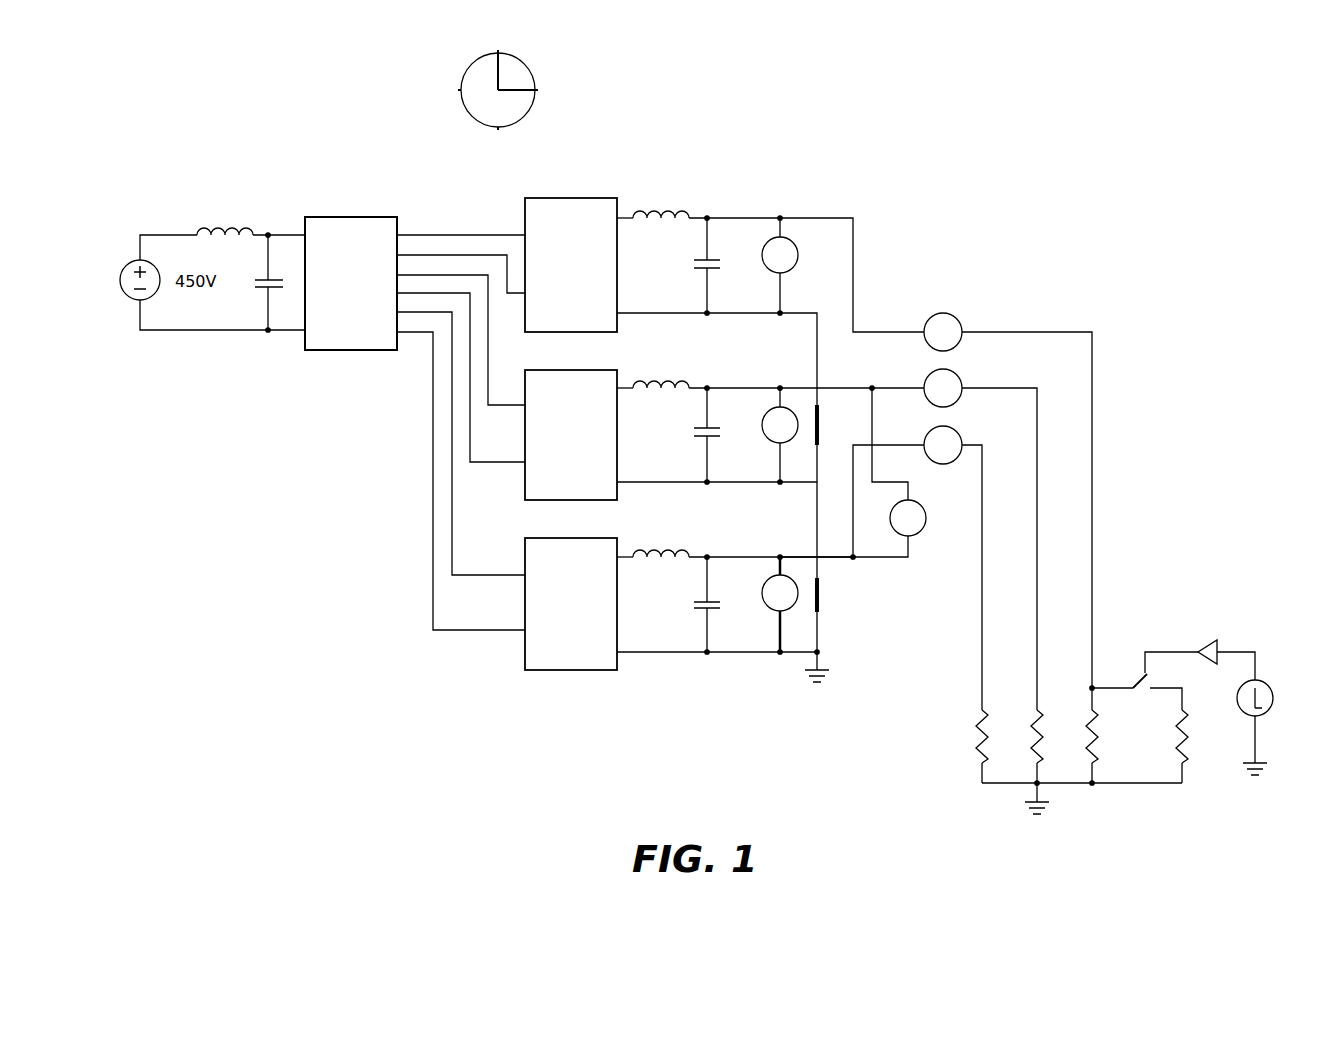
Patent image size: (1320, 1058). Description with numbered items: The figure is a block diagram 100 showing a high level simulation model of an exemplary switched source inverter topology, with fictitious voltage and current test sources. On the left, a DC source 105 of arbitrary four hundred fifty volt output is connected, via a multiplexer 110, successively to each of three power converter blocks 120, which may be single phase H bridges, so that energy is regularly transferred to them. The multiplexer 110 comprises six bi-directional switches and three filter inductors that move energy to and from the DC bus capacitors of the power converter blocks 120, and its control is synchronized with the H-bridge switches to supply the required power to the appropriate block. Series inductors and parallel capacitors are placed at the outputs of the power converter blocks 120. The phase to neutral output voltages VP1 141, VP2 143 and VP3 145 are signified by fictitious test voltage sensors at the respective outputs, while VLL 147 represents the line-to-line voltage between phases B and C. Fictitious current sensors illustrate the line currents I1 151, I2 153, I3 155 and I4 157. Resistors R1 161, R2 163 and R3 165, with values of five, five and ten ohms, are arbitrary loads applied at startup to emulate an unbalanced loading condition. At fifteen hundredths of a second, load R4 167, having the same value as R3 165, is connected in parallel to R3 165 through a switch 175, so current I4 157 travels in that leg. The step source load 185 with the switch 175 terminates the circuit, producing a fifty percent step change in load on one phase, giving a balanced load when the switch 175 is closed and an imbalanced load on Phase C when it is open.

The block diagram 100 is at (1040, 105).
The DC source 105 is at (152, 295).
The multiplexer 110 is at (350, 331).
The power converter blocks 120 is at (571, 176).
The phase to neutral voltage output VP1 141 is at (812, 233).
The phase to neutral voltage output VP2 143 is at (808, 378).
The phase to neutral voltage output VP3 145 is at (805, 572).
The line-to-line voltage VLL 147 is at (947, 533).
The line current I1 151 is at (990, 303).
The line current I2 153 is at (1003, 362).
The line current I3 155 is at (1005, 420).
The line current I4 157 is at (1162, 665).
The resistor R1 161 is at (973, 740).
The resistor R2 163 is at (1043, 748).
The resistor R3 165 is at (1100, 748).
The load R4 167 is at (1162, 752).
The switch 175 is at (1138, 672).
The step source load 185 is at (1220, 612).